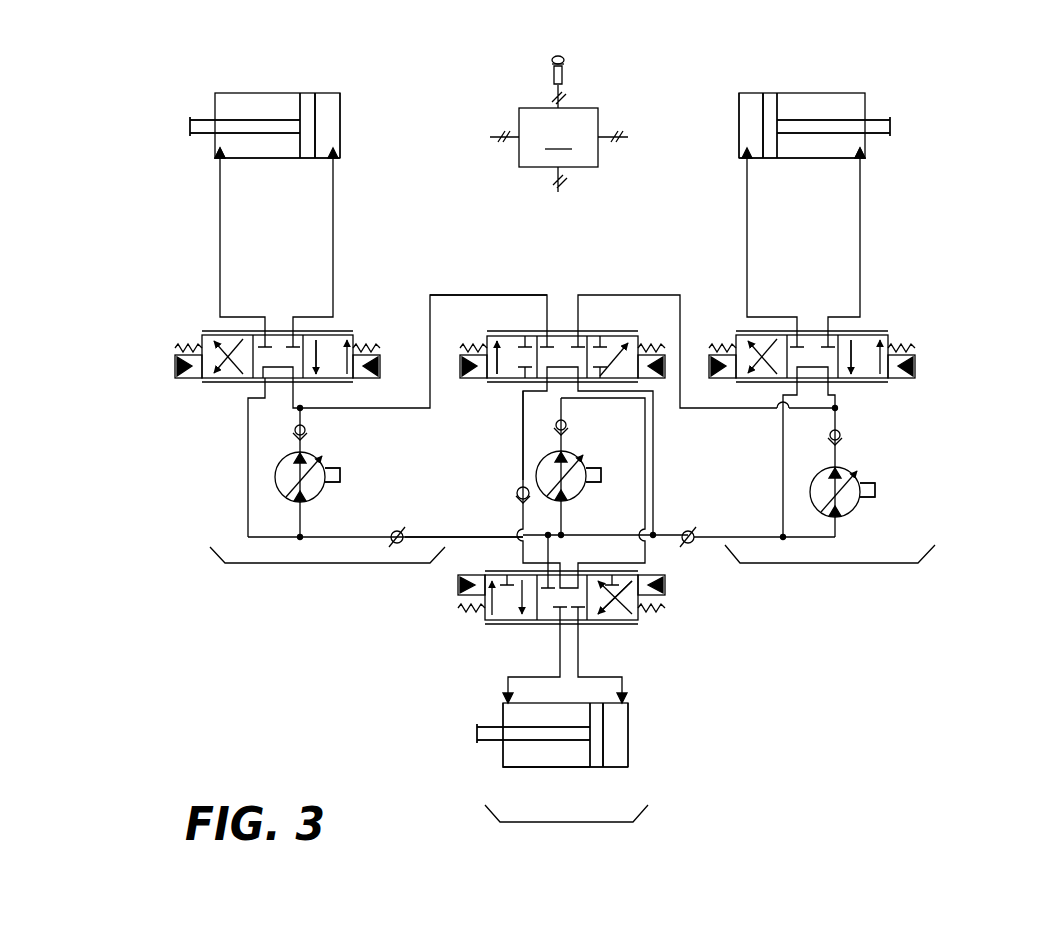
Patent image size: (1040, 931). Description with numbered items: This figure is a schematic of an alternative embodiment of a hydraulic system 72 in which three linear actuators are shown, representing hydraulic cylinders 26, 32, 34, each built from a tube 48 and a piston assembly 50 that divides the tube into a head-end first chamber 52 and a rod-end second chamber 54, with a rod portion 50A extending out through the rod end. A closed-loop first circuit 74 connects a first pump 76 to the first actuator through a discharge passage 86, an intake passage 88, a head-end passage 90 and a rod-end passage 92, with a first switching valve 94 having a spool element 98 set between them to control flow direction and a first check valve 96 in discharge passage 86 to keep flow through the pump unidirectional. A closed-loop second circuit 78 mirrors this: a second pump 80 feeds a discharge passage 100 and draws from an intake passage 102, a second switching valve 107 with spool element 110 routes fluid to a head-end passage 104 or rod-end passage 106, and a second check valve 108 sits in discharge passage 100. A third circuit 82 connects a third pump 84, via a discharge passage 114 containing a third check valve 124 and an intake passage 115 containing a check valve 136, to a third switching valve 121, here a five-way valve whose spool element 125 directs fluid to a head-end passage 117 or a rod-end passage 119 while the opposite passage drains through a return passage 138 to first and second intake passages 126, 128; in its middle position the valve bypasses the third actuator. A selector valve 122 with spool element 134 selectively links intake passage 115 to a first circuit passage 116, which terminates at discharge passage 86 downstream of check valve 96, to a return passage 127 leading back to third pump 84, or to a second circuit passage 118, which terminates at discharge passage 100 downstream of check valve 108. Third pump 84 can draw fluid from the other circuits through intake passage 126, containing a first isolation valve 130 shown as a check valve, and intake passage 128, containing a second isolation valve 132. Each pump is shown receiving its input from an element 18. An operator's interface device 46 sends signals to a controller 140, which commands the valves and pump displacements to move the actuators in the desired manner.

The engine 18 is at (626, 476).
The hydraulic cylinder 26 is at (333, 72).
The hydraulic cylinder 32 is at (874, 67).
The hydraulic cylinder 34 is at (664, 690).
The interface device 46 is at (566, 63).
The tube 48 is at (262, 159).
The piston assembly 50 is at (308, 159).
The rod portion 50A is at (200, 118).
The first chamber 52 is at (339, 119).
The second chamber 54 is at (218, 148).
The hydraulic system 72 is at (250, 655).
The first circuit 74 is at (346, 563).
The first pump 76 is at (290, 503).
The second circuit 78 is at (852, 563).
The second pump 80 is at (842, 513).
The third circuit 82 is at (592, 822).
The third pump 84 is at (579, 498).
The discharge passage 86 is at (312, 456).
The intake passage 88 is at (248, 442).
The head-end passage 90 is at (333, 244).
The rod-end passage 92 is at (220, 268).
The first switching valve 94 is at (357, 320).
The first check valve 96 is at (307, 431).
The spool element 98 is at (345, 381).
The discharge passage 100 is at (838, 465).
The intake passage 102 is at (783, 441).
The head-end passage 104 is at (748, 238).
The rod-end passage 106 is at (861, 268).
The second switching valve 107 is at (934, 332).
The second check valve 108 is at (841, 433).
The spool element 110 is at (888, 372).
The discharge passage 114 is at (564, 440).
The intake passage 115 is at (523, 449).
The first circuit passage 116 is at (488, 295).
The head-end passage 117 is at (580, 642).
The second circuit passage 118 is at (640, 295).
The rod-end passage 119 is at (558, 634).
The third switching valve 121 is at (690, 584).
The selector valve 122 is at (648, 319).
The third check valve 124 is at (550, 424).
The spool element 125 is at (639, 618).
The first intake passage 126 is at (422, 535).
The return passage 127 is at (655, 471).
The second intake passage 128 is at (740, 535).
The first isolation valve 130 is at (390, 532).
The second isolation valve 132 is at (688, 530).
The spool element 134 is at (488, 335).
The check valve 136 is at (516, 495).
The return passage 138 is at (551, 548).
The controller 140 is at (551, 174).